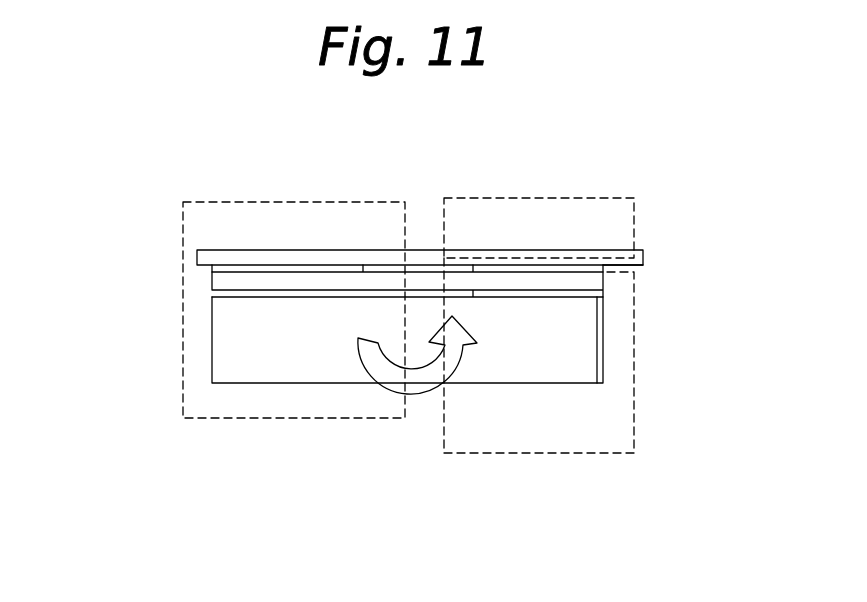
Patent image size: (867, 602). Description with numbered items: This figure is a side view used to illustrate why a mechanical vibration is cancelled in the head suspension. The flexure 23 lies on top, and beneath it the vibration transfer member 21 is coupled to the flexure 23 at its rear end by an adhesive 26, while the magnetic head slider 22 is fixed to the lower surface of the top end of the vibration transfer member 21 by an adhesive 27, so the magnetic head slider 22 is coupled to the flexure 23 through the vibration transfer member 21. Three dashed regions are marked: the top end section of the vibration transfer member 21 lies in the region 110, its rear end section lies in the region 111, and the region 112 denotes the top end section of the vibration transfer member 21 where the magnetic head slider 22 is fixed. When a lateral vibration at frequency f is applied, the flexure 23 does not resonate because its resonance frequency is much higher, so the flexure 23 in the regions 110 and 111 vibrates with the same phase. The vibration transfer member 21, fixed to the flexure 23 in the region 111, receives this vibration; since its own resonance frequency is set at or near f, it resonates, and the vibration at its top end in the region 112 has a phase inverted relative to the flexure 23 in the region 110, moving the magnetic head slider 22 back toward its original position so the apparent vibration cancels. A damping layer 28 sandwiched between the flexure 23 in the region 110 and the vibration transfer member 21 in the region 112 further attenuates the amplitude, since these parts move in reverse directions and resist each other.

The vibration transfer member 21 is at (213, 282).
The magnetic head slider 22 is at (225, 358).
The flexure 23 is at (203, 257).
The adhesive 26 is at (253, 268).
The adhesive 27 is at (570, 295).
The damping layer 28 is at (593, 268).
The region 110 is at (545, 198).
The region 111 is at (323, 202).
The region 112 is at (548, 453).